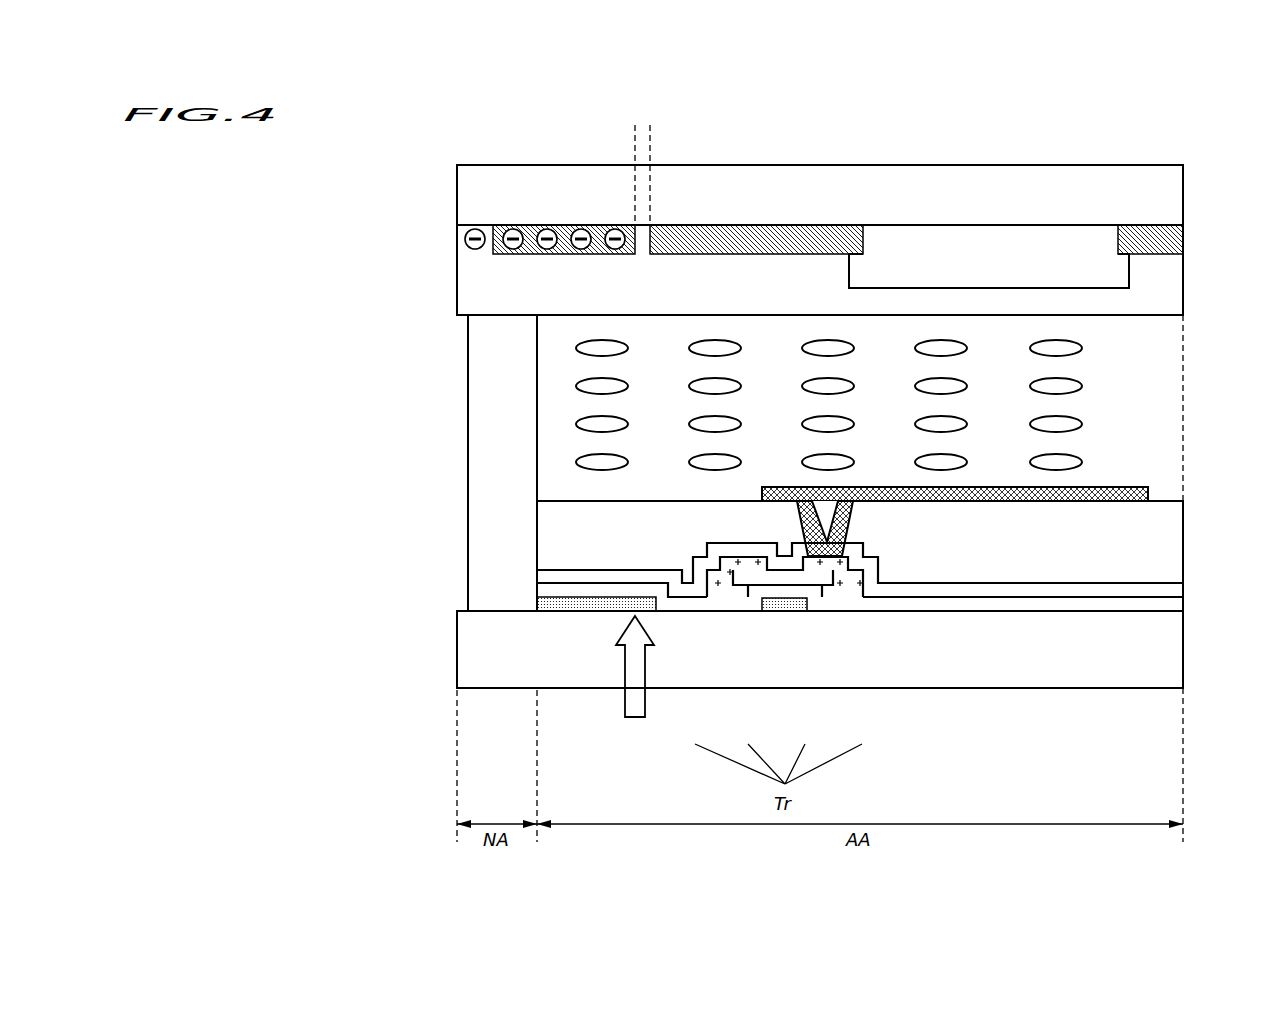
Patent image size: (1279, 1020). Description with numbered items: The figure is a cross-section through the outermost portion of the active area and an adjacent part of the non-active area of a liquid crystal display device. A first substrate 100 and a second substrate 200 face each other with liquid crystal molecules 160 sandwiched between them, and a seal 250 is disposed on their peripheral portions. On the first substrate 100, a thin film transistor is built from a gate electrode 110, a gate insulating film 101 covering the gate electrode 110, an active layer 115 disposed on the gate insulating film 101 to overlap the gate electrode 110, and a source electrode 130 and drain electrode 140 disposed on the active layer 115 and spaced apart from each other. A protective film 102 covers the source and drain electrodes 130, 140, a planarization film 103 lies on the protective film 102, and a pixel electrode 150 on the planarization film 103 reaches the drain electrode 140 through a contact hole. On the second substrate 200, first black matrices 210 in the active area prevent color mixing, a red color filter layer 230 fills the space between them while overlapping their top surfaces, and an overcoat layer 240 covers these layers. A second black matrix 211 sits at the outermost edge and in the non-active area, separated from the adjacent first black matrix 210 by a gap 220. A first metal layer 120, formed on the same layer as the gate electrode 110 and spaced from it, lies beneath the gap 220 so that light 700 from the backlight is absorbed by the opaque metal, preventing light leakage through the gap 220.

The first substrate 100 is at (1176, 650).
The gate insulating film 101 is at (1176, 603).
The protective film 102 is at (1176, 588).
The planarization film 103 is at (1176, 538).
The gate electrode 110 is at (790, 603).
The active layer 115 is at (837, 590).
The first metal layer 120 is at (587, 612).
The source electrode 130 is at (713, 590).
The drain electrode 140 is at (853, 575).
The pixel electrode 150 is at (957, 503).
The liquid crystal molecules 160 is at (1083, 462).
The second substrate 200 is at (1176, 204).
The first black matrix 210 is at (1176, 243).
The second black matrix 211 is at (598, 226).
The gap 220 is at (683, 129).
The color filter layer 230 is at (1097, 233).
The overcoat layer 240 is at (1176, 294).
The seal 250 is at (470, 540).
The light 700 is at (635, 679).